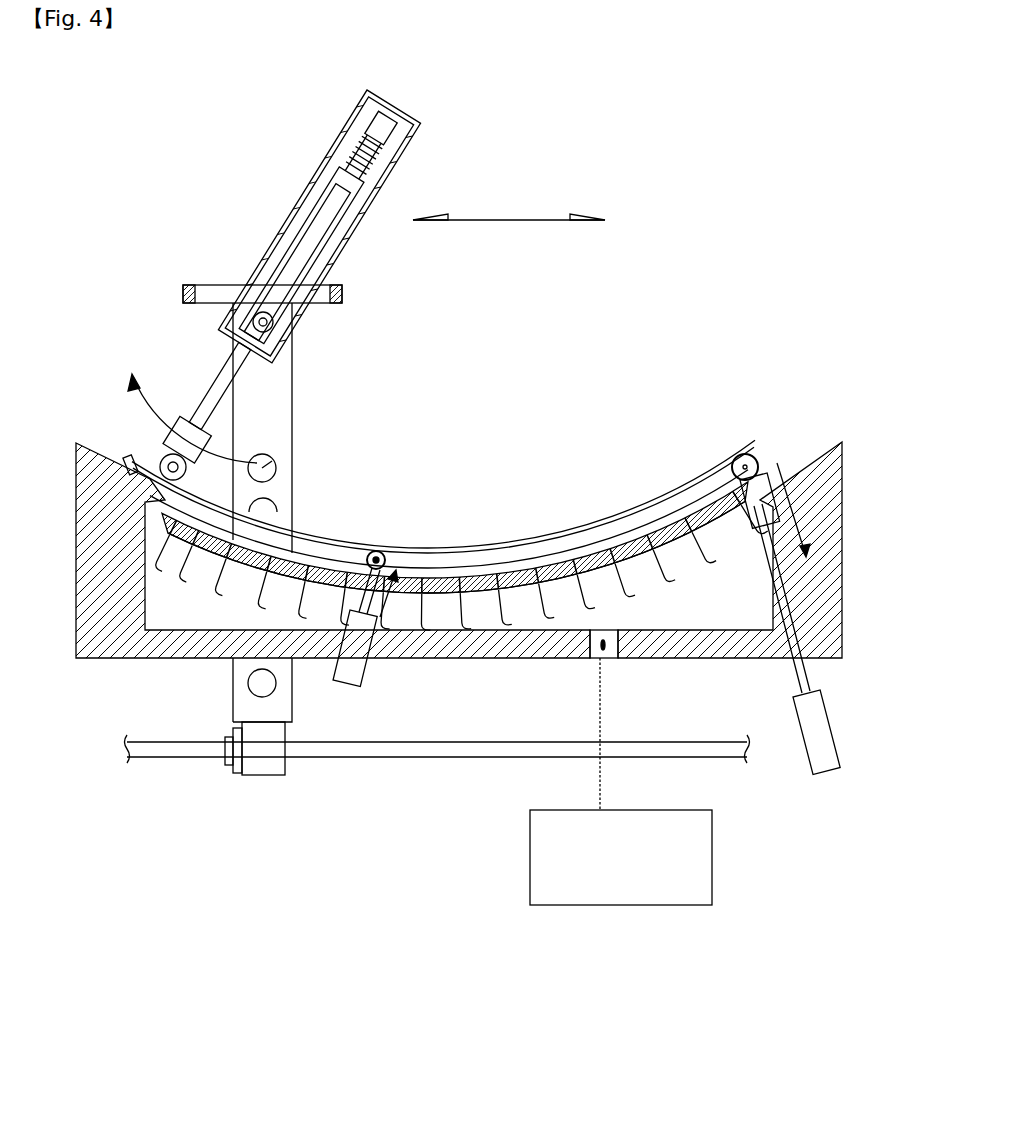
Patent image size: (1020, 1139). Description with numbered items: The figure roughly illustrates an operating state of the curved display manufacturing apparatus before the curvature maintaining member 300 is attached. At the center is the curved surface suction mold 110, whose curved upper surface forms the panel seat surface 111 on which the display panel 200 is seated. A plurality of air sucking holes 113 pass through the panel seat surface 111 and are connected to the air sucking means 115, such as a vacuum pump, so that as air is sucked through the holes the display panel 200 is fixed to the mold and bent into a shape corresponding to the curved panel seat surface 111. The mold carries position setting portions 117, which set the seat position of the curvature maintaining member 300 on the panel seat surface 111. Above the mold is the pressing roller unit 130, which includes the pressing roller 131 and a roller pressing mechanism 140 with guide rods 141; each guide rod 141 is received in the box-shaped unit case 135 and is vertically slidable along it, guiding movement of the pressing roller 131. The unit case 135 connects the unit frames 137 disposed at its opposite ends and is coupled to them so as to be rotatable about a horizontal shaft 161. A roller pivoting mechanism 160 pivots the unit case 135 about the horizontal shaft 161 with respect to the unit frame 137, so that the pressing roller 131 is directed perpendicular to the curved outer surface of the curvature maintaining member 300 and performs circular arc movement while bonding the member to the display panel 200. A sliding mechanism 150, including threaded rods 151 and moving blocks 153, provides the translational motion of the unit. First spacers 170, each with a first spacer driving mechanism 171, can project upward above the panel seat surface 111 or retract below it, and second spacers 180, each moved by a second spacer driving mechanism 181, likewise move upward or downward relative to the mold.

The curved surface suction mold 110 is at (90, 545).
The panel seat surface 111 is at (548, 562).
The air sucking holes 113 is at (487, 577).
The air sucking means 115 is at (622, 895).
The position setting portions 117 is at (130, 462).
The pressing roller unit 130 is at (365, 208).
The pressing roller 131 is at (145, 455).
The unit case 135 is at (319, 226).
The unit frames 137 is at (268, 402).
The roller pressing mechanism 140 is at (301, 255).
The guide rods 141 is at (370, 146).
The sliding mechanism 150 is at (437, 798).
The threaded rods 151 is at (347, 758).
The moving blocks 153 is at (270, 768).
The roller pivoting mechanism 160 is at (300, 332).
The horizontal shaft 161 is at (210, 293).
The first spacers 170 is at (743, 458).
The first spacer driving mechanism 171 is at (802, 750).
The second spacers 180 is at (376, 550).
The second spacer driving mechanism 181 is at (362, 665).
The display panel 200 is at (632, 518).
The curvature maintaining member 300 is at (498, 572).